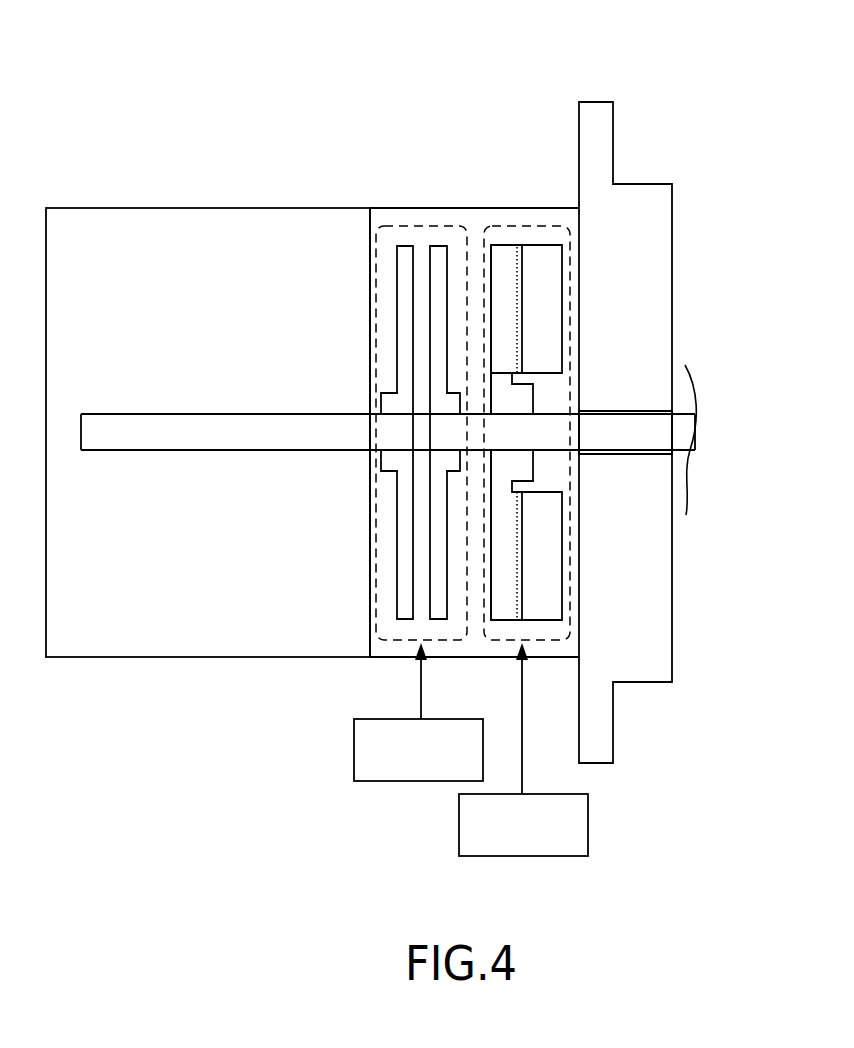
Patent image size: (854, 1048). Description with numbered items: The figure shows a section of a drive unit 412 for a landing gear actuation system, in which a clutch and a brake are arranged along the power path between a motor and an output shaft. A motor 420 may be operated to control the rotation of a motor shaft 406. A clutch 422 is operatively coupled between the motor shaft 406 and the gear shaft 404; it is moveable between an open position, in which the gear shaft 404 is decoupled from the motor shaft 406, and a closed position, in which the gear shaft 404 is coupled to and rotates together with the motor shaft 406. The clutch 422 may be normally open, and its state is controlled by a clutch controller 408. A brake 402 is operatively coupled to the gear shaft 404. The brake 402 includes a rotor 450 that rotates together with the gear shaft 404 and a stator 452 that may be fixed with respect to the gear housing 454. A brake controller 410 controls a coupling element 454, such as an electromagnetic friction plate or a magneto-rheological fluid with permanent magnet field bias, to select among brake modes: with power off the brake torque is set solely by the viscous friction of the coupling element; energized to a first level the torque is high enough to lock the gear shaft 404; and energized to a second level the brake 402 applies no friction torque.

The drive unit 412 is at (283, 81).
The motor 420 is at (212, 614).
The motor shaft 406 is at (212, 414).
The gear housing / coupling element 454 is at (579, 128).
The gear shaft 404 is at (618, 414).
The clutch 422 is at (423, 226).
The brake 402 is at (520, 224).
The rotor 450 is at (500, 250).
The stator 452 is at (560, 265).
The clutch controller 408 is at (354, 752).
The brake controller 410 is at (588, 820).